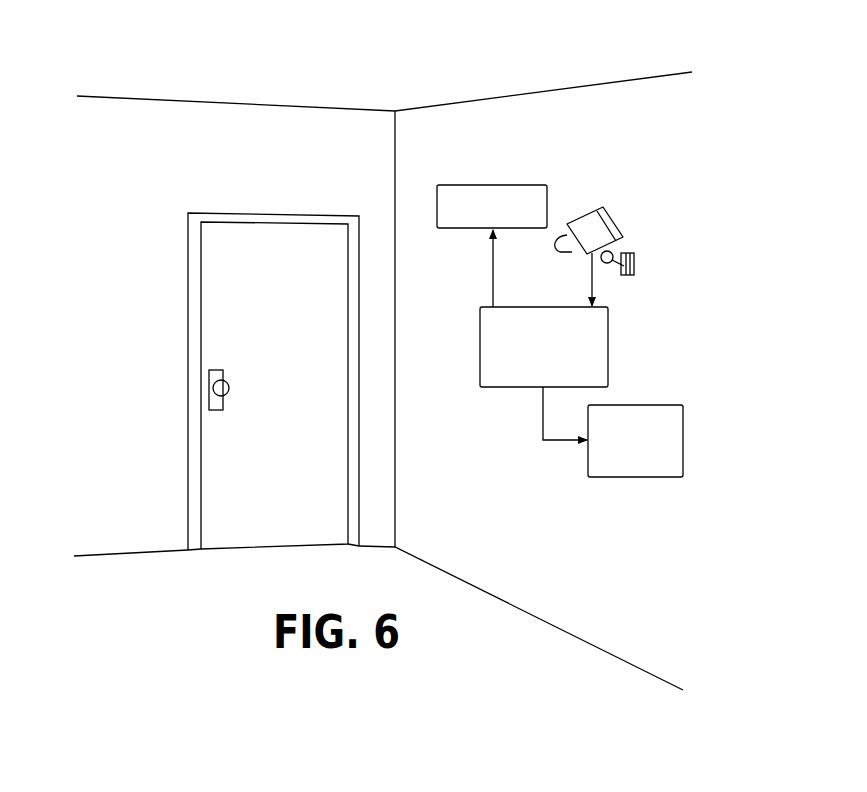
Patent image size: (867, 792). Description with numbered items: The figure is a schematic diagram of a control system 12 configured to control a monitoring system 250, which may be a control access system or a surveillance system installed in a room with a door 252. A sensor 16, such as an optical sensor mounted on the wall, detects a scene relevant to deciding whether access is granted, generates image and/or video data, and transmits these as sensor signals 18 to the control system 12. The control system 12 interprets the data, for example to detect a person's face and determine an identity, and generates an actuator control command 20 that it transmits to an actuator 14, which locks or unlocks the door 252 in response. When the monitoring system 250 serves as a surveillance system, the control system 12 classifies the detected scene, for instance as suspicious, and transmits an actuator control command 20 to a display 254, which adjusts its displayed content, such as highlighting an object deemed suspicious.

The monitoring system 250 is at (590, 73).
The door 252 is at (299, 496).
The actuator 14 is at (487, 185).
The sensor 16 is at (623, 226).
The control system 12 is at (480, 362).
The actuator control command 20 is at (490, 300).
The sensor signals 18 is at (593, 287).
The display 254 is at (633, 405).